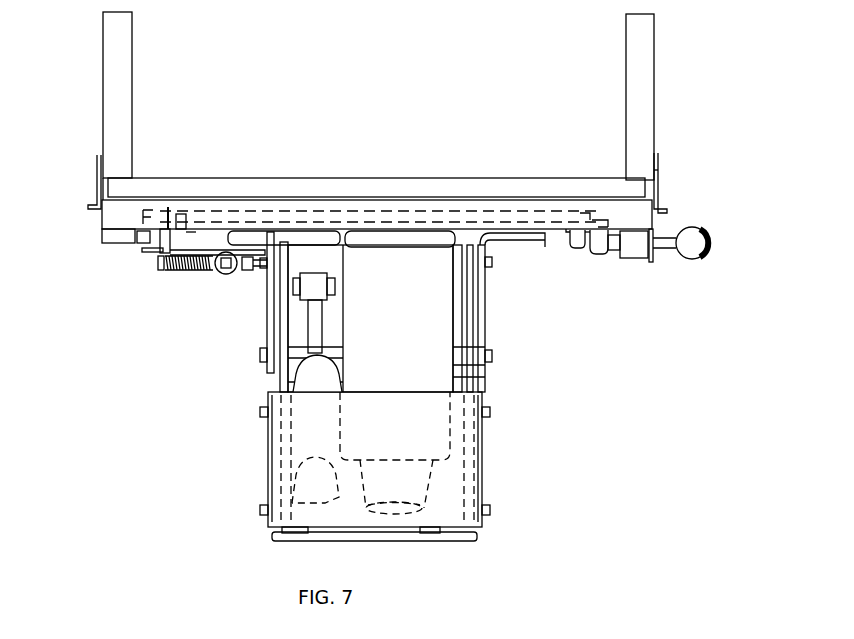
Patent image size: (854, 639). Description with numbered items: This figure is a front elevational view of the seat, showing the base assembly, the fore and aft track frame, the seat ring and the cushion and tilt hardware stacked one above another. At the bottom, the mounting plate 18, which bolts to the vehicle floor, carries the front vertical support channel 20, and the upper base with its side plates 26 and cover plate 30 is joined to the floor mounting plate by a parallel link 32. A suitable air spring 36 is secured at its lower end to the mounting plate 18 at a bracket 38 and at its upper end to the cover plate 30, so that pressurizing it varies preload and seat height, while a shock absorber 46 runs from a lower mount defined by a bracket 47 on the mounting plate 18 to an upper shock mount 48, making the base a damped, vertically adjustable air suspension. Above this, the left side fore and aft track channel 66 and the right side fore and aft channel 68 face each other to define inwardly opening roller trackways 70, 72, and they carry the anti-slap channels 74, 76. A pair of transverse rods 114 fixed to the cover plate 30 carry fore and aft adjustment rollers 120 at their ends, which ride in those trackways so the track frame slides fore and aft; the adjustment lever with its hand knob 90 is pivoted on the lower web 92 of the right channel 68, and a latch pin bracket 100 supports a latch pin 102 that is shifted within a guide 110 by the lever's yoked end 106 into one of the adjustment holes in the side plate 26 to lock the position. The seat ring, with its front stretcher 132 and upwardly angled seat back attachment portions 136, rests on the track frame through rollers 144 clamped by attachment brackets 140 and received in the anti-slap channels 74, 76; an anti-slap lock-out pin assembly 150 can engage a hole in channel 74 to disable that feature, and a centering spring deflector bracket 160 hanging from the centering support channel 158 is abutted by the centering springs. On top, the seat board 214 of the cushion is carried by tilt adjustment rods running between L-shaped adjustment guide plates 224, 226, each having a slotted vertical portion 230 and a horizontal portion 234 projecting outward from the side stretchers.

The mounting plate 18 is at (430, 541).
The front vertical support channel 20 is at (408, 435).
The side plates 26 is at (267, 322).
The cover plate 30 is at (470, 292).
The parallel link 32 is at (282, 365).
The air spring 36 is at (400, 340).
The bracket 38 is at (377, 533).
The shock absorber 46 is at (323, 318).
The bracket 47 is at (305, 540).
The upper shock mount 48 is at (338, 240).
The left side fore and aft track channel 66 is at (574, 238).
The right side fore and aft channel 68 is at (175, 233).
The roller trackway 70 is at (568, 240).
The roller trackway 72 is at (184, 229).
The anti-slap channel 74 is at (591, 256).
The anti-slap channel 76 is at (150, 250).
The hand knob 90 is at (218, 273).
The lower web 92 is at (216, 246).
The latch pin bracket 100 is at (170, 275).
The latch pin 102 is at (182, 275).
The yoked end 106 is at (245, 272).
The guide 110 is at (280, 242).
The rods 114 is at (553, 233).
The fore and aft adjustment rollers 120 is at (188, 240).
The front stretcher 132 is at (627, 212).
The seat back attachment portions 136 is at (127, 48).
The attachment bracket 140 is at (100, 236).
The roller 144 is at (145, 241).
The anti-slap lock-out pin assembly 150 is at (672, 231).
The centering support channel 158 is at (306, 631).
The centering spring deflector bracket 160 is at (329, 205).
The seat board 214 is at (425, 190).
The adjustment guide plate 224 is at (97, 170).
The adjustment guide plate 226 is at (660, 176).
The vertical portion 230 is at (658, 160).
The horizontal portion 234 is at (705, 236).